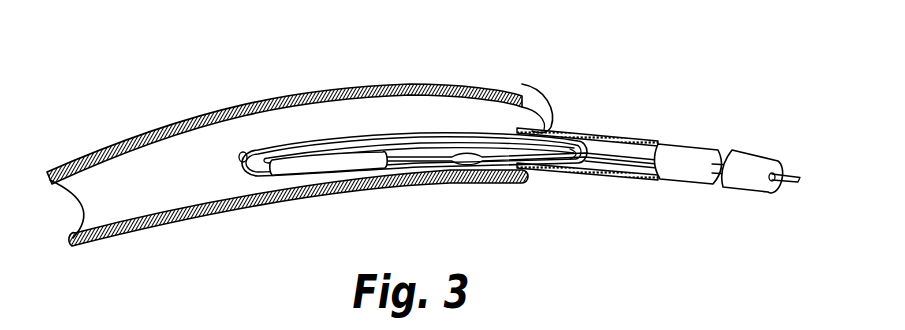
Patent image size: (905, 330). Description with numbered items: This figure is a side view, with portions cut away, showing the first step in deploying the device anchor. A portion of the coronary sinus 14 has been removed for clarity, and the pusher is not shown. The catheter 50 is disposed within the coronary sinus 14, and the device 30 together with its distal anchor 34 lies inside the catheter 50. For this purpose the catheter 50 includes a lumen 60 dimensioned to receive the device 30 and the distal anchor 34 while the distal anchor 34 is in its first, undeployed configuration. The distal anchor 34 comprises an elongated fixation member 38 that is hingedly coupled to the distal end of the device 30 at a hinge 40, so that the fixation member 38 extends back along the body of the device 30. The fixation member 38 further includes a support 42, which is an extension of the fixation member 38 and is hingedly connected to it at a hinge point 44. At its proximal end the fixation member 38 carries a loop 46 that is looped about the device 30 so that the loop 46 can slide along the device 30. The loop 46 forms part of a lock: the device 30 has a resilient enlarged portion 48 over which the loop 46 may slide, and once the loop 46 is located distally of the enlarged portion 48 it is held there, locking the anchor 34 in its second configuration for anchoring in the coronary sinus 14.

The coronary sinus 14 is at (128, 145).
The device 30 is at (597, 153).
The distal anchor 34 is at (436, 134).
The elongated fixation member 38 is at (303, 140).
The hinge 40 is at (264, 177).
The support 42 is at (486, 140).
The hinge point 44 is at (373, 141).
The loop 46 is at (586, 169).
The resilient enlarged portion 48 is at (447, 173).
The catheter 50 is at (672, 145).
The lumen 60 is at (237, 158).